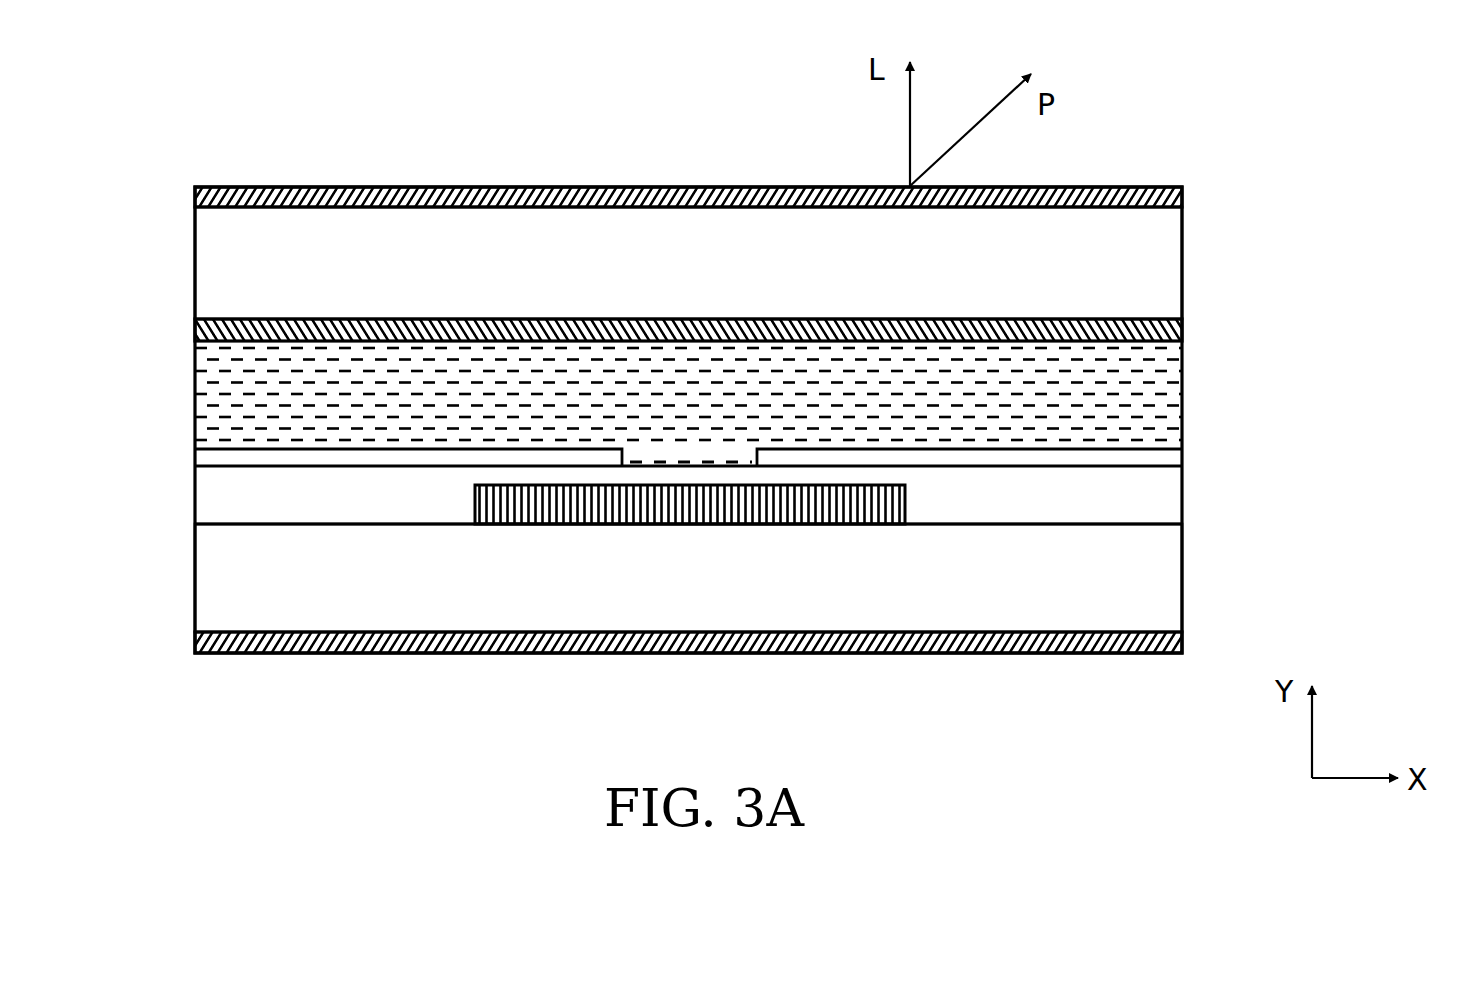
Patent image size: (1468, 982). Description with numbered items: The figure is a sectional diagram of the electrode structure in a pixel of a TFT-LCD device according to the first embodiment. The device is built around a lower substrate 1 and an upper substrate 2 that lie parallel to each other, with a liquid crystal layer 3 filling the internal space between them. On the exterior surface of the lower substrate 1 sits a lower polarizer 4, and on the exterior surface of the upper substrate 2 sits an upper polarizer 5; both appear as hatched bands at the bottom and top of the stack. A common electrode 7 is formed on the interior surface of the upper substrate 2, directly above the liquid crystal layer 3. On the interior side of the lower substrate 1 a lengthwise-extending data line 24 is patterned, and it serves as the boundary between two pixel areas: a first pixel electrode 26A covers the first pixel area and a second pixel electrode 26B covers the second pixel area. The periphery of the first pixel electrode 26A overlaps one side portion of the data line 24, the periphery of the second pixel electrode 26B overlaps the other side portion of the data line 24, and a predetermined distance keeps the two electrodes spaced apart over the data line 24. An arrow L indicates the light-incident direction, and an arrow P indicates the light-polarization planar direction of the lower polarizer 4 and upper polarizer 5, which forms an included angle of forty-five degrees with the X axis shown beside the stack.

The lower substrate 1 is at (1160, 584).
The upper substrate 2 is at (1158, 266).
The liquid crystal layer 3 is at (1160, 402).
The lower polarizer 4 is at (1182, 641).
The upper polarizer 5 is at (1160, 189).
The common electrode 7 is at (1160, 325).
The data line 24 is at (905, 496).
The first pixel electrode 26A is at (1160, 457).
The second pixel electrode 26B is at (220, 455).